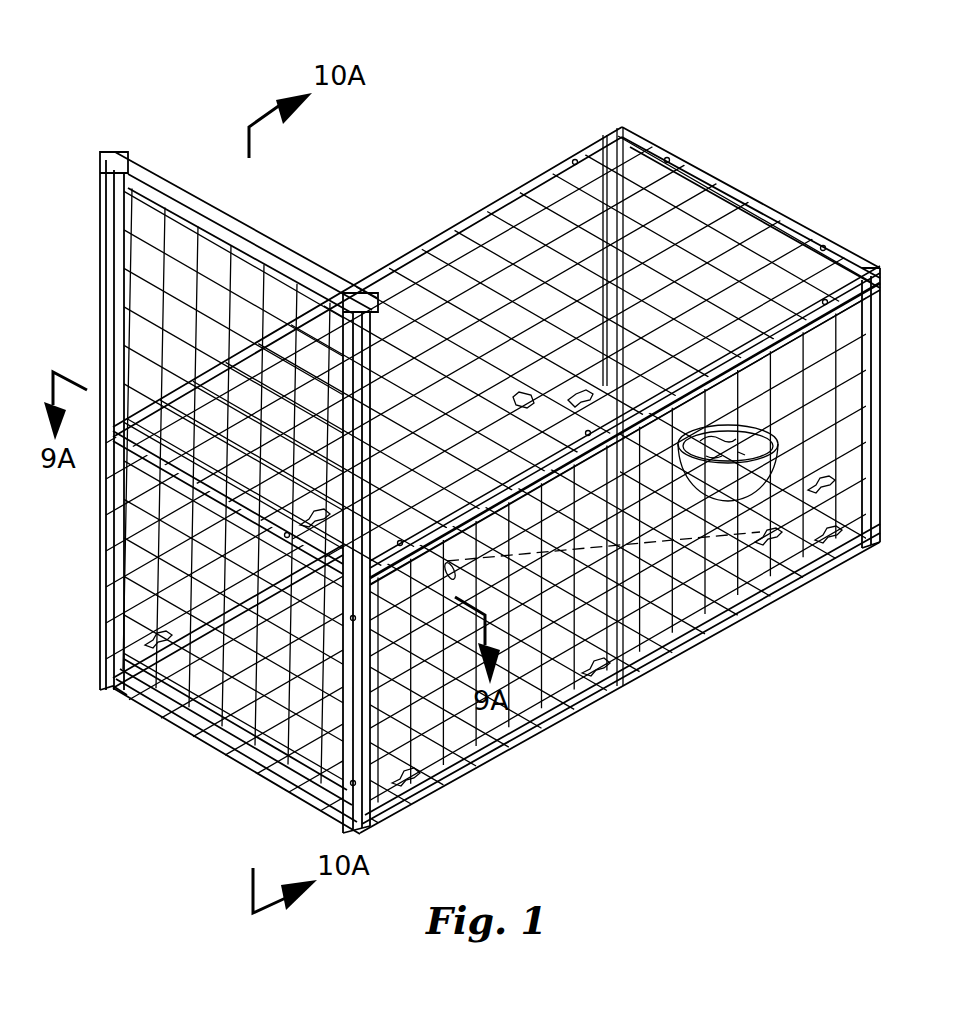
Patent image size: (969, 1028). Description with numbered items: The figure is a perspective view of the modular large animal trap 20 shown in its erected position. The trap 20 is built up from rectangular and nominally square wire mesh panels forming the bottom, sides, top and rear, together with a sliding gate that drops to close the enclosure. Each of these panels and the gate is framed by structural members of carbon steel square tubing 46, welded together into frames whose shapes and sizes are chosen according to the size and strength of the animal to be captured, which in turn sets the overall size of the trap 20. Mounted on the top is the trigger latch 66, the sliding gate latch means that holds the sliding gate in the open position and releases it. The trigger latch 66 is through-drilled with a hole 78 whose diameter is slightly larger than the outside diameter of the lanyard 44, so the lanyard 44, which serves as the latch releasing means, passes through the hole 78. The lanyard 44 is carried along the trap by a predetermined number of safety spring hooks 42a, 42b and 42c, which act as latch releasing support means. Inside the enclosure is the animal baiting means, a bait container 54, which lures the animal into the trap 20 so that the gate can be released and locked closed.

The trap 20 is at (460, 436).
The safety spring hook 42a is at (448, 580).
The safety spring hook 42b is at (758, 548).
The safety spring hook 42c is at (523, 390).
The lanyard 44 is at (685, 545).
The square tubing 46 is at (592, 145).
The bait container 54 is at (777, 500).
The trigger latch 66 is at (292, 520).
The hole 78 is at (318, 518).